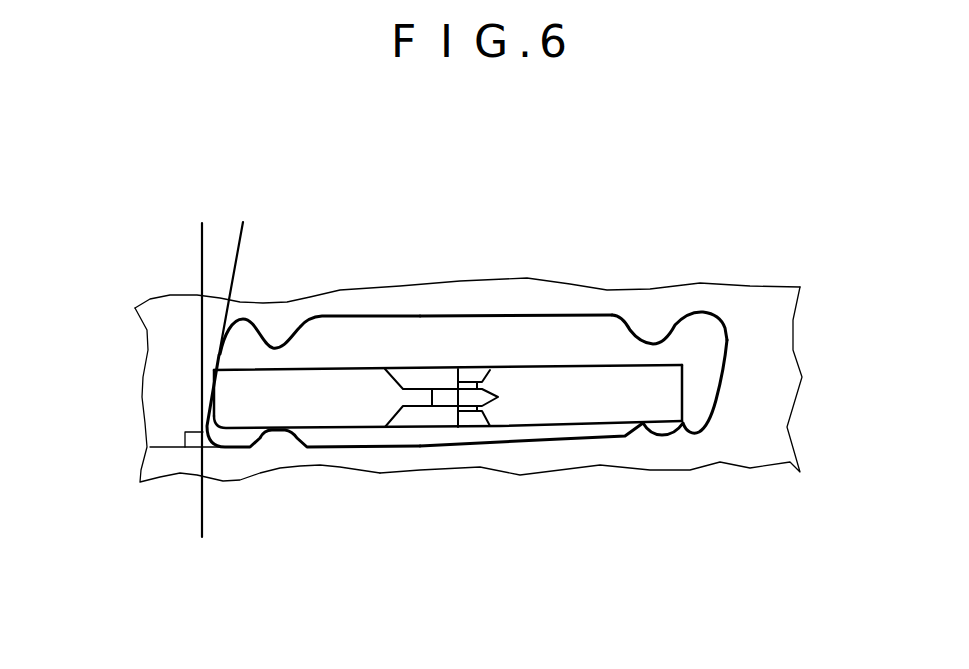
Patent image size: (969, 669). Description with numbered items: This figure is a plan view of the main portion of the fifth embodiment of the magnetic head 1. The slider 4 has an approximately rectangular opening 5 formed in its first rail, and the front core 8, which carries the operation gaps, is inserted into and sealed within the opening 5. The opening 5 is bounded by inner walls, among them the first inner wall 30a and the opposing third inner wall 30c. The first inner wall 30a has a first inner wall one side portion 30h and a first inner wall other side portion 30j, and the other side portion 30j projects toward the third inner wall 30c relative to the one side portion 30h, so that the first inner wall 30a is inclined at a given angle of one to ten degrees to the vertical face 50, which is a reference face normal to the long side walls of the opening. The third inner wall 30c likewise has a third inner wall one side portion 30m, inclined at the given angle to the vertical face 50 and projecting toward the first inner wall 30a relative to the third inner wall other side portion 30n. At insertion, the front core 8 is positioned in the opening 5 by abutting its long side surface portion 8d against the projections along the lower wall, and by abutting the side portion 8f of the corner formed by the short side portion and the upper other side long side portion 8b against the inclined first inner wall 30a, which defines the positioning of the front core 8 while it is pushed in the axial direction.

The magnetic head 1 is at (723, 275).
The slider 4 is at (467, 272).
The opening 5 is at (516, 280).
The front core 8 is at (374, 373).
The other side long side portion 8b is at (448, 297).
The long side surface portion 8d is at (448, 470).
The side portion of the corner portion 8f is at (140, 385).
The first inner wall 30a is at (313, 332).
The third inner wall 30c is at (685, 429).
The first inner wall one side portion 30h is at (358, 435).
The first inner wall other side portion 30j is at (221, 391).
The third inner wall one side portion 30m is at (595, 405).
The third inner wall other side portion 30n is at (741, 288).
The vertical face 50 is at (200, 280).